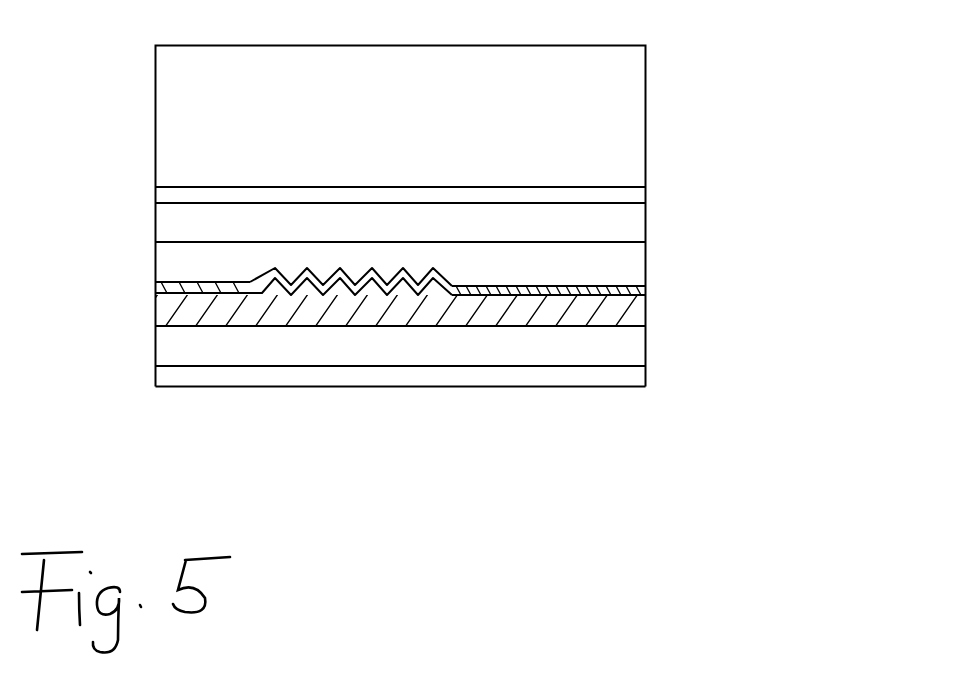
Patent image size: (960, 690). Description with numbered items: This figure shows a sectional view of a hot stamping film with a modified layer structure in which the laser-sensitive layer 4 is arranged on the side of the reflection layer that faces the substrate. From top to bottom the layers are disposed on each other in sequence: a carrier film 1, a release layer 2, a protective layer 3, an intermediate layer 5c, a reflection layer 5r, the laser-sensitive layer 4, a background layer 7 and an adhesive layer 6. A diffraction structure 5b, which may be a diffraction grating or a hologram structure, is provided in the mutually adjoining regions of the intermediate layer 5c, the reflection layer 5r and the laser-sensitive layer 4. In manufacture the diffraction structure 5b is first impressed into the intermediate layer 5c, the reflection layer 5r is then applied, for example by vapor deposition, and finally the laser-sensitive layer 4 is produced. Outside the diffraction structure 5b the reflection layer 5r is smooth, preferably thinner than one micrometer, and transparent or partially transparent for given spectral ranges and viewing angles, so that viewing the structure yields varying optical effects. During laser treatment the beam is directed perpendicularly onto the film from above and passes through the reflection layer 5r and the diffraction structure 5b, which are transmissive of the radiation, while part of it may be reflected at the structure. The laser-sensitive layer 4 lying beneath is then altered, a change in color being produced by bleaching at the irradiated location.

The carrier film 1 is at (583, 93).
The release layer 2 is at (583, 198).
The protective layer 3 is at (583, 223).
The intermediate layer 5c is at (582, 262).
The smooth reflection layer 5r is at (600, 292).
The diffraction structure 5b is at (352, 296).
The laser-sensitive layer 4 is at (587, 313).
The background layer 7 is at (583, 347).
The adhesive layer 6 is at (583, 377).